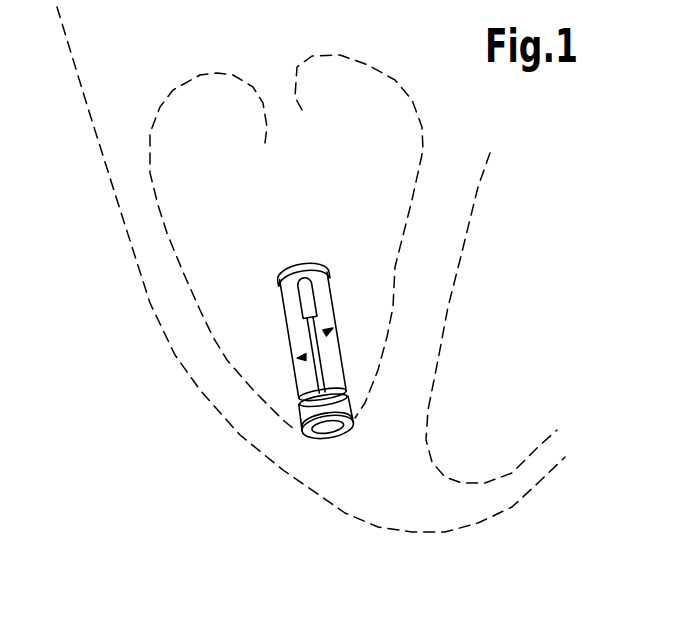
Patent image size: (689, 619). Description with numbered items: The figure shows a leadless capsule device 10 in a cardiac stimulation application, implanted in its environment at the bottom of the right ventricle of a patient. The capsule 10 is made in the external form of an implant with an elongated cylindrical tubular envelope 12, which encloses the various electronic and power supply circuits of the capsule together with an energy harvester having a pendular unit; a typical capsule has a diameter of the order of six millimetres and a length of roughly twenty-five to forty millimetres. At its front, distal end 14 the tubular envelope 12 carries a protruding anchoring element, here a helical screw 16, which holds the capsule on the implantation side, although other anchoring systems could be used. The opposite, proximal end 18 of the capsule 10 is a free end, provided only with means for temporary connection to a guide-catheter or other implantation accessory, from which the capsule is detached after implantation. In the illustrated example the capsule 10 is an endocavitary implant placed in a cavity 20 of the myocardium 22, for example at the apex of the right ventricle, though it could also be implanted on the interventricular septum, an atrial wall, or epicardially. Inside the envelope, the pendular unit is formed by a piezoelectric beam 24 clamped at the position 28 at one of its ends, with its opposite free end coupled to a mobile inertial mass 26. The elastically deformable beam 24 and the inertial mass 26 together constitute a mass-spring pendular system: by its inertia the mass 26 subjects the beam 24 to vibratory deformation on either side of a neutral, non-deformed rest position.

The leadless capsule device 10 is at (318, 352).
The tubular envelope 12 is at (298, 289).
The front (distal) end 14 is at (340, 403).
The helical screw 16 is at (302, 428).
The proximal end 18 is at (303, 263).
The cavity 20 is at (223, 156).
The myocardium 22 is at (138, 222).
The piezoelectric beam 24 is at (325, 333).
The inertial mass 26 is at (323, 285).
The clamping position 28 is at (306, 357).